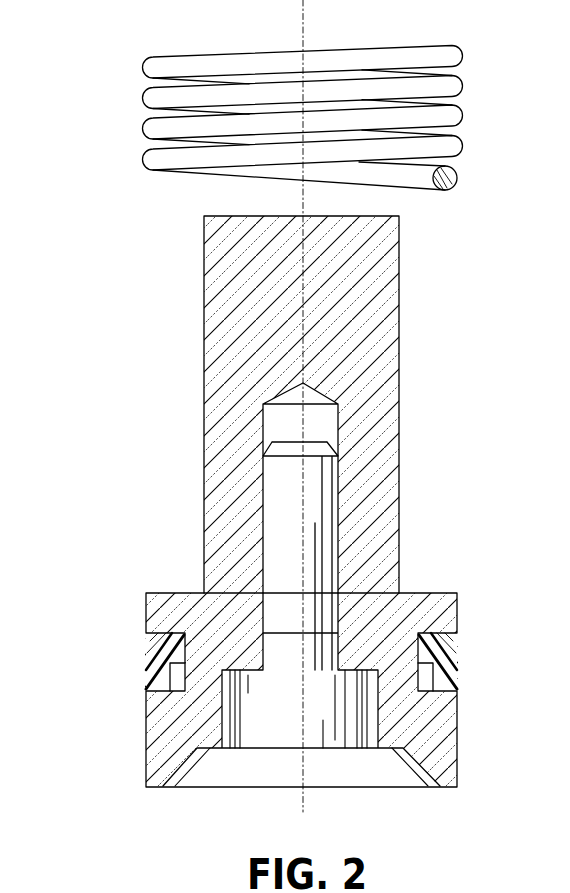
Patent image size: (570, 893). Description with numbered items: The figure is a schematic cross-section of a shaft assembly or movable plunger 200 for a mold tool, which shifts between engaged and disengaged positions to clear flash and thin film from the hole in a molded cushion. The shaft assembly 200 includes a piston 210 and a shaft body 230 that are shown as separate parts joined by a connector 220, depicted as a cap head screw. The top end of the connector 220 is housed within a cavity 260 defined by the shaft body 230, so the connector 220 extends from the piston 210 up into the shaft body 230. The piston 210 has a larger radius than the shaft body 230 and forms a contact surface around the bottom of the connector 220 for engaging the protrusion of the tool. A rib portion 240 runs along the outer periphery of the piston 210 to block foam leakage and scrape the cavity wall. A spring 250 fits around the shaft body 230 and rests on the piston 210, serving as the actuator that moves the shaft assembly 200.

The shaft assembly 200 is at (146, 240).
The piston 210 is at (425, 720).
The connector 220 is at (278, 720).
The shaft body 230 is at (399, 370).
The rib portion 240 is at (163, 648).
The spring 250 is at (453, 118).
The cavity 260 is at (333, 427).